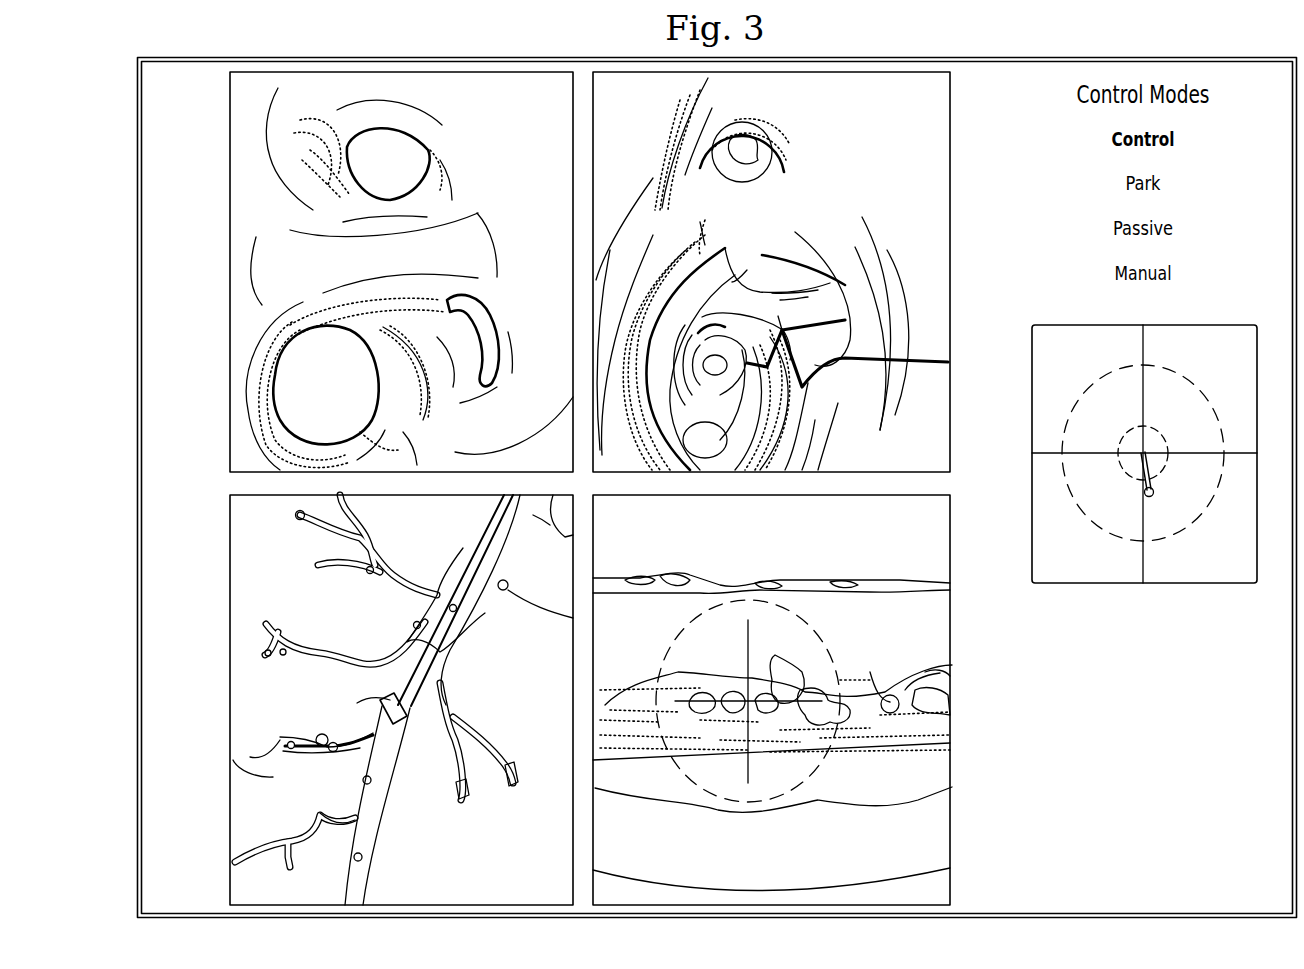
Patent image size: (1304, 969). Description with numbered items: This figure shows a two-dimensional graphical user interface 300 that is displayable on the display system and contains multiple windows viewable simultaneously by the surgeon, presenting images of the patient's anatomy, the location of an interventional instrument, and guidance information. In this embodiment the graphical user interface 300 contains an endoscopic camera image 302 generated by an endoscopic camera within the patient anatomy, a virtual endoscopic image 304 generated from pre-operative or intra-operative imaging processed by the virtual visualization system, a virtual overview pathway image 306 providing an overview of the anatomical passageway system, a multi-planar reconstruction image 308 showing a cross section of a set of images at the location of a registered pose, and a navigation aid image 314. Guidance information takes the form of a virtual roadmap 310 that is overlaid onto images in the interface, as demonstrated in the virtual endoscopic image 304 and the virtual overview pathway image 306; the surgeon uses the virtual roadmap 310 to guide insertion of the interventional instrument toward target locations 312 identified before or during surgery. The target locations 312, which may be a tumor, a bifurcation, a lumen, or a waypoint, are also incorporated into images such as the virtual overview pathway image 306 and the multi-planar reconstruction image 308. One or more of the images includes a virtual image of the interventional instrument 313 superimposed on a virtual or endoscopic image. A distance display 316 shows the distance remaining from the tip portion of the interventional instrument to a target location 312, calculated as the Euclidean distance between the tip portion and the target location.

The graphical user interface 300 is at (346, 57).
The endoscopic camera image 302 is at (228, 250).
The virtual endoscopic image 304 is at (955, 248).
The virtual overview pathway image 306 is at (228, 630).
The multi-planar reconstruction image 308 is at (956, 730).
The virtual roadmap 310 is at (946, 343).
The target location 312 is at (250, 757).
The virtual image of the interventional instrument 313 is at (473, 612).
The navigation aid image 314 is at (1207, 322).
The distance display 316 is at (1257, 628).